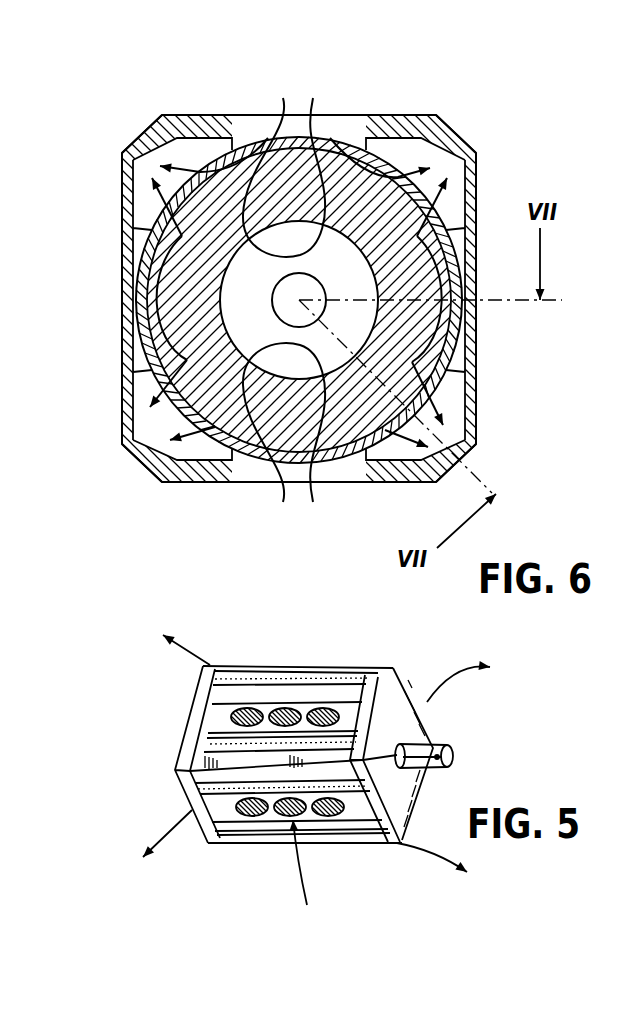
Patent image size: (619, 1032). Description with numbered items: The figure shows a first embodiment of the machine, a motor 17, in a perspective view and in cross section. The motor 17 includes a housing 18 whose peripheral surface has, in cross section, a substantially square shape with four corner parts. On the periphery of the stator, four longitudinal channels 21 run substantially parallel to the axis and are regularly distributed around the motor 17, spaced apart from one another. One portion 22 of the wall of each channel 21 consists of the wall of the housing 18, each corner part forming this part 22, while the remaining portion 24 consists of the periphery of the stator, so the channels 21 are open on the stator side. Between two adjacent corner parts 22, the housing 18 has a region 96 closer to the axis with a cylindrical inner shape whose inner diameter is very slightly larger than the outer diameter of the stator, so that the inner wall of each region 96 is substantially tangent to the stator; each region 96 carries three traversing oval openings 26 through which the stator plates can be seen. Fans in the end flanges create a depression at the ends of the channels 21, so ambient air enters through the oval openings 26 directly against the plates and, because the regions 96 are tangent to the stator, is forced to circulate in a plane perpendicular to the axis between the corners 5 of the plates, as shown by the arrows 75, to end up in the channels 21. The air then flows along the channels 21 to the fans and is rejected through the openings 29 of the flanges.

In FIG. 6, the corners of the plates 5 is at (240, 150).
In FIG. 6, the motor 17 is at (282, 517).
In FIG. 5, the motor 17 is at (462, 752).
In FIG. 6, the housing 18 is at (207, 485).
In FIG. 5, the housing 18 is at (217, 740).
In FIG. 6, the longitudinal channels 21 is at (190, 153).
In FIG. 6, the portion of the wall of the channels 22 is at (477, 197).
In FIG. 6, the remaining portion 24 is at (440, 163).
In FIG. 5, the oval openings 26 is at (280, 708).
In FIG. 5, the openings of the flanges 29 is at (178, 797).
In FIG. 6, the arrows 75 is at (299, 300).
In FIG. 6, the region 96 is at (452, 338).